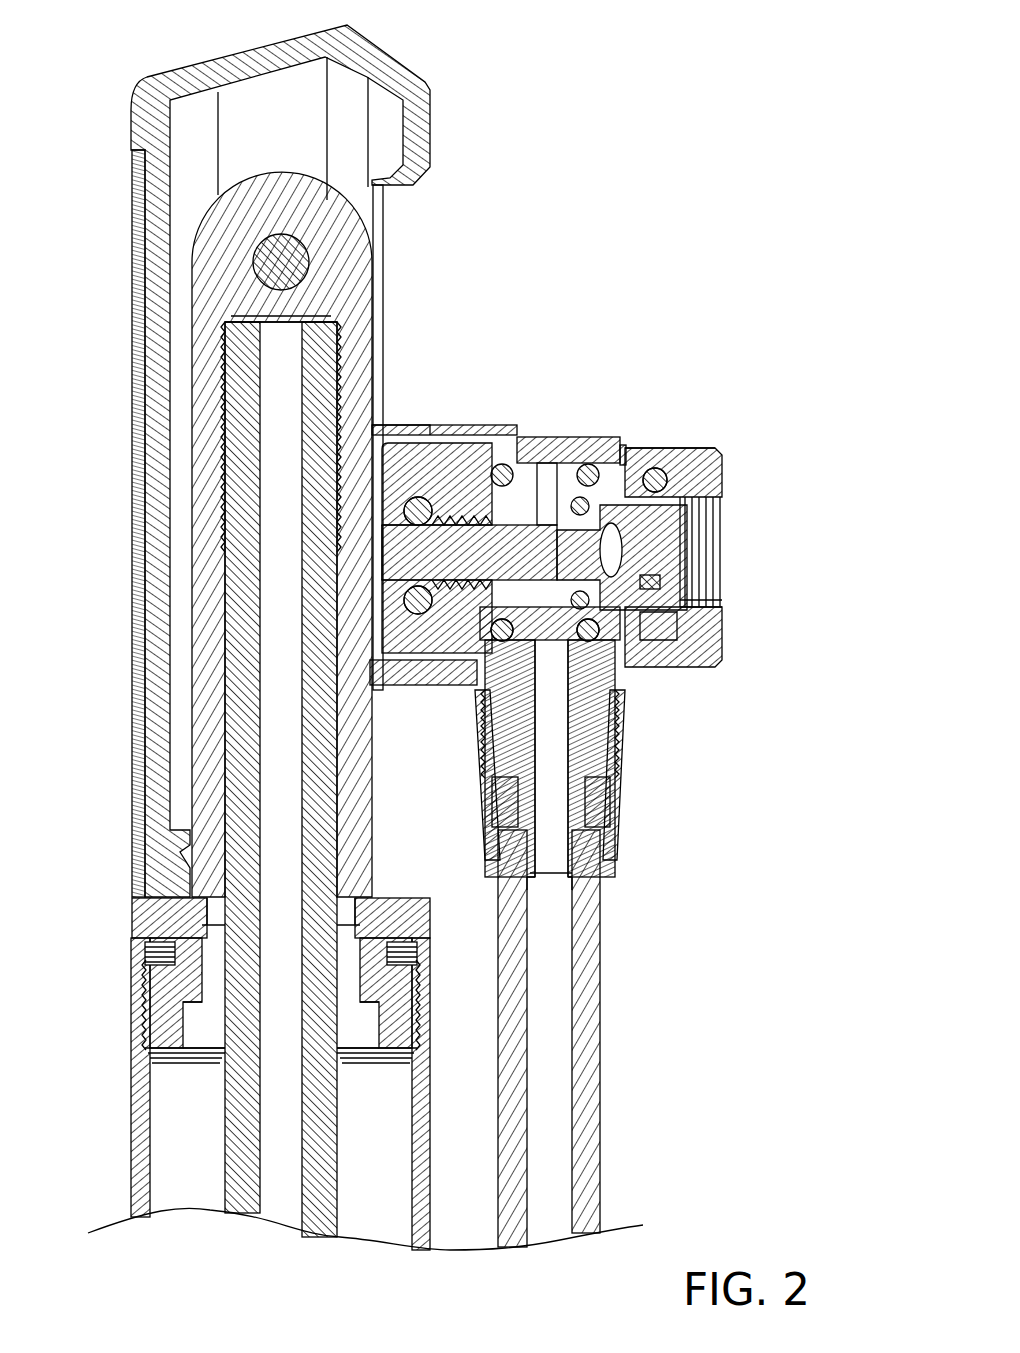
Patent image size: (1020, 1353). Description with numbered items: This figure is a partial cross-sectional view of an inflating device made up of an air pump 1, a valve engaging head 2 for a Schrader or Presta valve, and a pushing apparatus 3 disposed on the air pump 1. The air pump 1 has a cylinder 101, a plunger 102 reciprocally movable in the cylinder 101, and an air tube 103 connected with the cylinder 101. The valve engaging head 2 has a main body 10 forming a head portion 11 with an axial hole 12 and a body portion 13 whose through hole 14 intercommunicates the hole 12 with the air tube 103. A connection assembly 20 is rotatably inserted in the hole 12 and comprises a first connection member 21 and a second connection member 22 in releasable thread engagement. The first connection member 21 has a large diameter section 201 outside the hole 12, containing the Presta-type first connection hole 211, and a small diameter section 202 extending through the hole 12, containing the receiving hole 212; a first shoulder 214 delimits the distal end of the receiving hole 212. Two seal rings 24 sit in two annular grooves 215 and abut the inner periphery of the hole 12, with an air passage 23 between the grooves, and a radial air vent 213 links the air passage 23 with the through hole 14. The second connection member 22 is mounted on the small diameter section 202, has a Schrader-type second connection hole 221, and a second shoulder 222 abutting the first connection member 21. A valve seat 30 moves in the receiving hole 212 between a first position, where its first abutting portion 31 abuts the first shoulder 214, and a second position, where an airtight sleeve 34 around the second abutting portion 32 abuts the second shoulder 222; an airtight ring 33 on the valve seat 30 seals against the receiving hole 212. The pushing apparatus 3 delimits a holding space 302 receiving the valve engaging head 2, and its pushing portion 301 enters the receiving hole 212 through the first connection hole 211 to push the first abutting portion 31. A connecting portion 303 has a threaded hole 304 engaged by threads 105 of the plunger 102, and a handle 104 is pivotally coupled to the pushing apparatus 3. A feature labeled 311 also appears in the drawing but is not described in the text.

The air pump 1 is at (130, 1005).
The cylinder 101 is at (140, 1120).
The plunger 102 is at (248, 758).
The air tube 103 is at (580, 1015).
The handle 104 is at (212, 78).
The threads 105 is at (230, 337).
The valve engaging head 2 is at (650, 432).
The connection assembly 20 is at (475, 429).
The large diameter section 201 is at (433, 431).
The small diameter section 202 is at (685, 462).
The first connection member 21 is at (393, 447).
The first connection hole 211 is at (385, 562).
The receiving hole 212 is at (503, 462).
The air vent 213 is at (576, 465).
The first shoulder 214 is at (488, 602).
The annular grooves 215 is at (606, 648).
The second connection member 22 is at (715, 470).
The second connection hole 221 is at (706, 520).
The second shoulder 222 is at (678, 600).
The air passage 23 is at (582, 500).
The seal rings 24 is at (632, 702).
The pushing apparatus 3 is at (452, 427).
The valve seat 30 is at (655, 640).
The pushing portion 301 is at (420, 656).
The holding space 302 is at (383, 407).
The connecting portion 303 is at (222, 436).
The hole 304 is at (230, 392).
The first abutting portion 31 is at (540, 523).
The bore wall 311 is at (600, 766).
The second abutting portion 32 is at (690, 553).
The airtight ring 33 is at (640, 485).
The airtight sleeve 34 is at (658, 582).
The main body 10 is at (540, 427).
The head portion 11 is at (627, 445).
The hole 12 is at (560, 470).
The body portion 13 is at (617, 773).
The through hole 14 is at (555, 878).